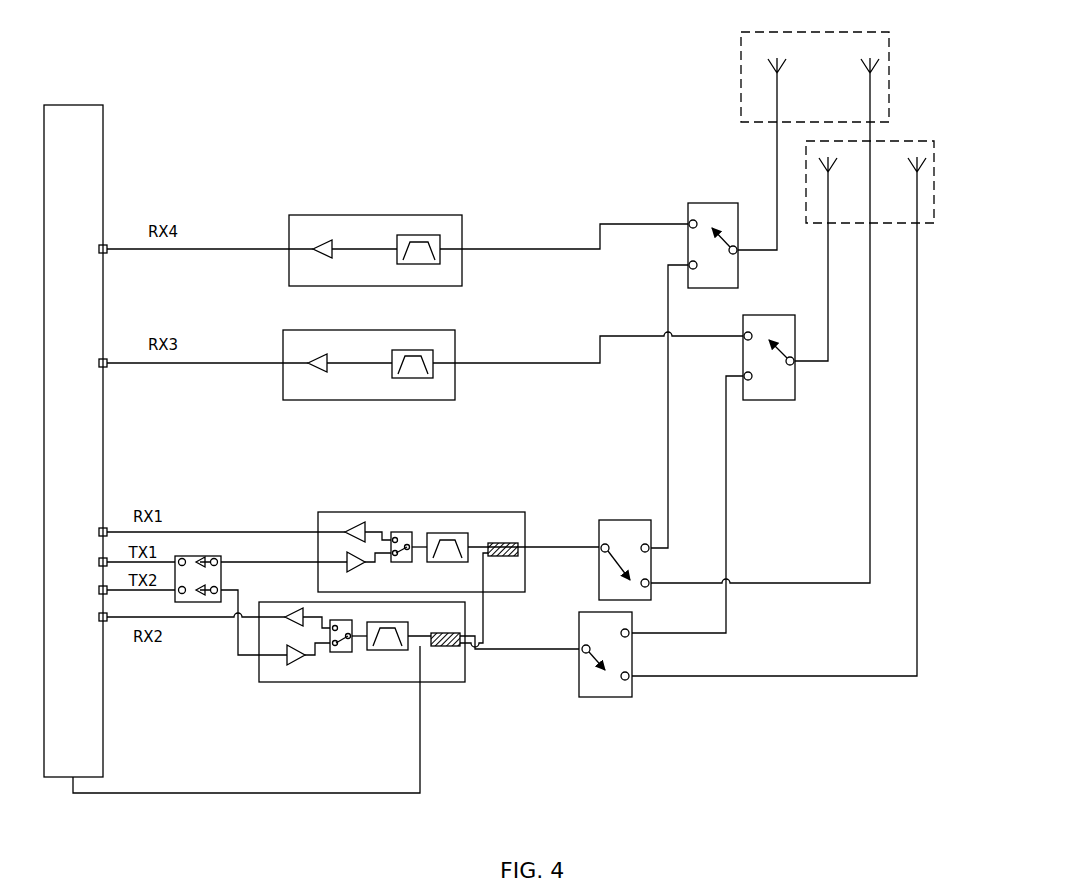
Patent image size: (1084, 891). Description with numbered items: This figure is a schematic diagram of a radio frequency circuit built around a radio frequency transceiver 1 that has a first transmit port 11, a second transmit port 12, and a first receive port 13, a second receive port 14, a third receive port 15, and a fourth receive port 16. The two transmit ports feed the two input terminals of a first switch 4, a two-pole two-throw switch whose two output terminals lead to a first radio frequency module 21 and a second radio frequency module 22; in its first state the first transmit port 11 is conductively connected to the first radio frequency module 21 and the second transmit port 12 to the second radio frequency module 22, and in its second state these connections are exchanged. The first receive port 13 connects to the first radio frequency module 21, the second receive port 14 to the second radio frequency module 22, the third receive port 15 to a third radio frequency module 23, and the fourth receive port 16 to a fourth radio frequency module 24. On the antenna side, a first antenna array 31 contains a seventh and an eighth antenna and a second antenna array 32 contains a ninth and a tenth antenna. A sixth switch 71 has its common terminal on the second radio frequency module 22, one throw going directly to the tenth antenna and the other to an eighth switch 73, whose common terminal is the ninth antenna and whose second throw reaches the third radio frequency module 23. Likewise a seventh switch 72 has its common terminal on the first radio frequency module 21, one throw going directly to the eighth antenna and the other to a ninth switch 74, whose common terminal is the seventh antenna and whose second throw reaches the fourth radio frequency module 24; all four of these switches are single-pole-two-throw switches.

The radio frequency transceiver 1 is at (103, 130).
The first transmit port 11 is at (99, 562).
The second transmit port 12 is at (99, 590).
The first receive port 13 is at (99, 532).
The second receive port 14 is at (99, 617).
The third receive port 15 is at (99, 363).
The fourth receive port 16 is at (99, 249).
The first switch 4 is at (221, 577).
The first radio frequency module 21 is at (383, 511).
The second radio frequency module 22 is at (323, 682).
The third radio frequency module 23 is at (455, 345).
The fourth radio frequency module 24 is at (462, 215).
The first antenna array 31 is at (741, 66).
The second antenna array 32 is at (934, 178).
The sixth switch 71 is at (604, 697).
The seventh switch 72 is at (625, 520).
The eighth switch 73 is at (770, 400).
The ninth switch 74 is at (712, 203).